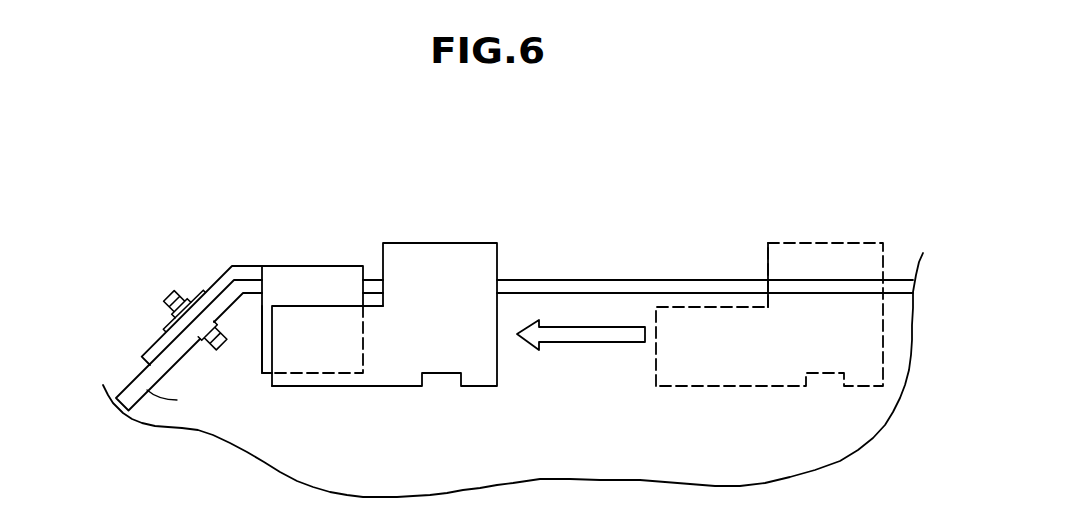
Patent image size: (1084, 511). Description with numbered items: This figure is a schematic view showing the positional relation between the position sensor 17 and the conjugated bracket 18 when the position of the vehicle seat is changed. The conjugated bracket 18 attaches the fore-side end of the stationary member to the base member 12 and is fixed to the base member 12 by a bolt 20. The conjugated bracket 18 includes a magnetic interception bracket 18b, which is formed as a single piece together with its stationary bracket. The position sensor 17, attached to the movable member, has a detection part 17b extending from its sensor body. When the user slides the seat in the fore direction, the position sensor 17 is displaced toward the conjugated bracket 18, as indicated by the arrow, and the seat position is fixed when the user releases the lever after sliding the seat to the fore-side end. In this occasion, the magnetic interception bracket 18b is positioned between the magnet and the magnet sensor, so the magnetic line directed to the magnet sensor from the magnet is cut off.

The base member 12 is at (142, 392).
The position sensor 17 is at (449, 228).
The detection part 17b is at (305, 387).
The conjugated bracket 18 is at (302, 252).
The magnetic interception bracket 18b is at (262, 350).
The bolt 20 is at (173, 290).